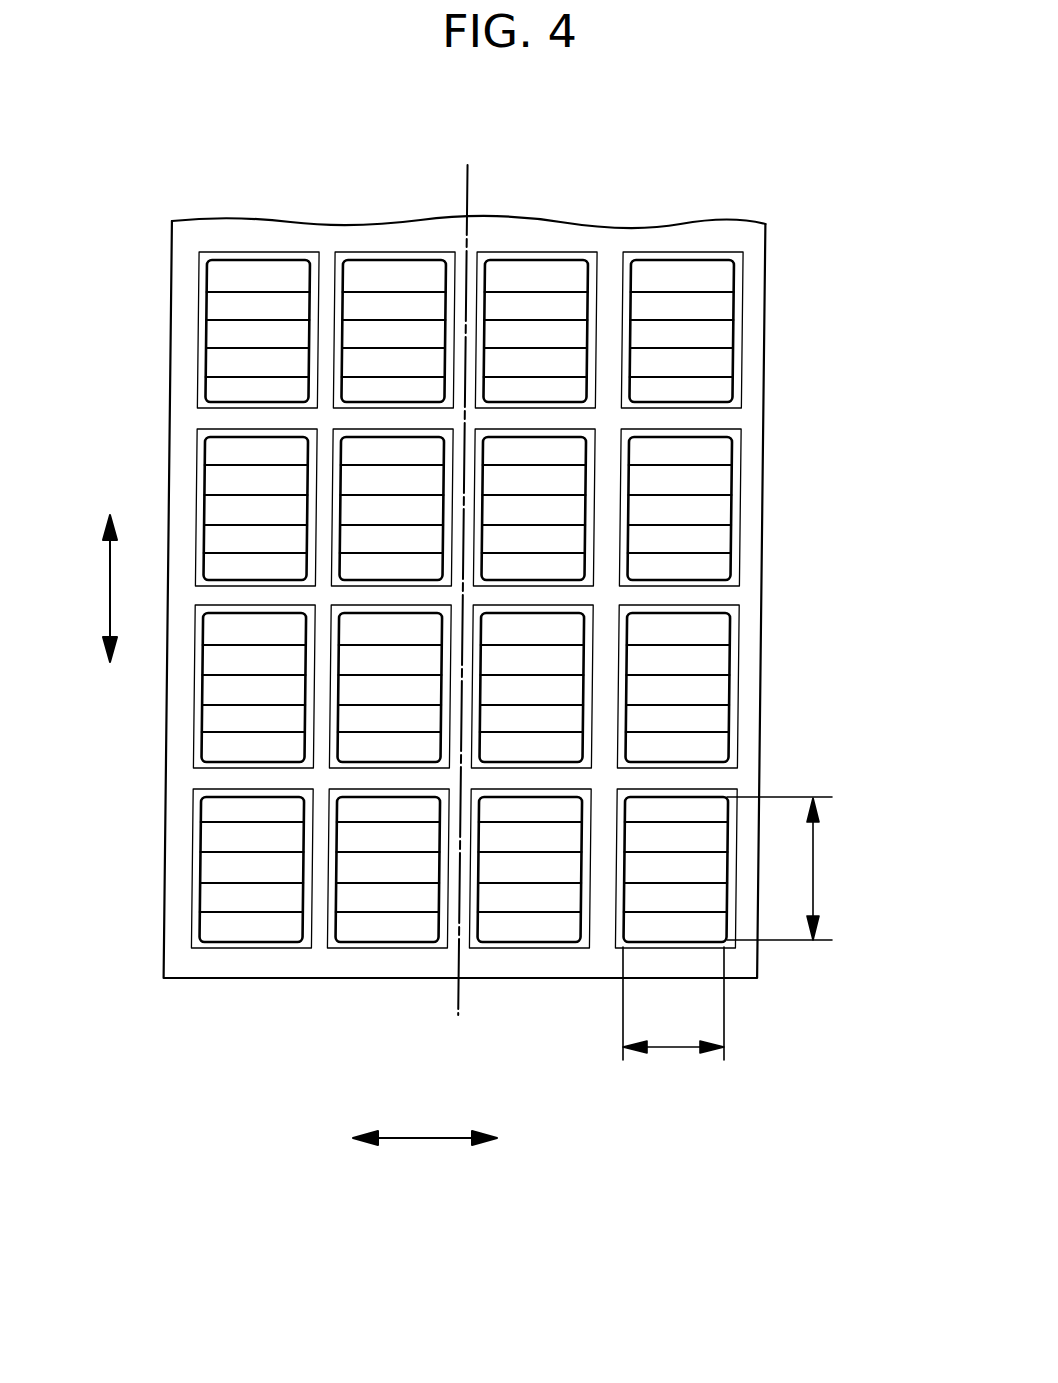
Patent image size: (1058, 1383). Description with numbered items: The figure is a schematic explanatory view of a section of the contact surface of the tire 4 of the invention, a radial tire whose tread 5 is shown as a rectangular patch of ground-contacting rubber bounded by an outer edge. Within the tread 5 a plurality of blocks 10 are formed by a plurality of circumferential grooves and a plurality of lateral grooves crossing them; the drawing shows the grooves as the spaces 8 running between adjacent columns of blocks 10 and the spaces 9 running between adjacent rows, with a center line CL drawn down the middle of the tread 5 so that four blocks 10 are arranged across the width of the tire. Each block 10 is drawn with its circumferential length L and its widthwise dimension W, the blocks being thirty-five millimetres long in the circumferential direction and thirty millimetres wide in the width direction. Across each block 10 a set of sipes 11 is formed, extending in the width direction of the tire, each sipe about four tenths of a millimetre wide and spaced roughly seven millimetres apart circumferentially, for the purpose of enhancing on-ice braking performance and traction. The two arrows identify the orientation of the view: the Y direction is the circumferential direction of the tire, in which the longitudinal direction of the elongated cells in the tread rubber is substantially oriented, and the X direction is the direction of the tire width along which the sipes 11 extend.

The tire 4 is at (841, 251).
The tread 5 is at (665, 230).
The vertical scribe line 8 is at (323, 272).
The horizontal scribe line 9 is at (715, 418).
The blocks 10 is at (740, 355).
The sipes 11 is at (690, 320).
The center line CL is at (463, 569).
The panel length L is at (815, 875).
The panel width W is at (677, 1050).
The X direction X is at (420, 1140).
The Y direction Y is at (110, 612).